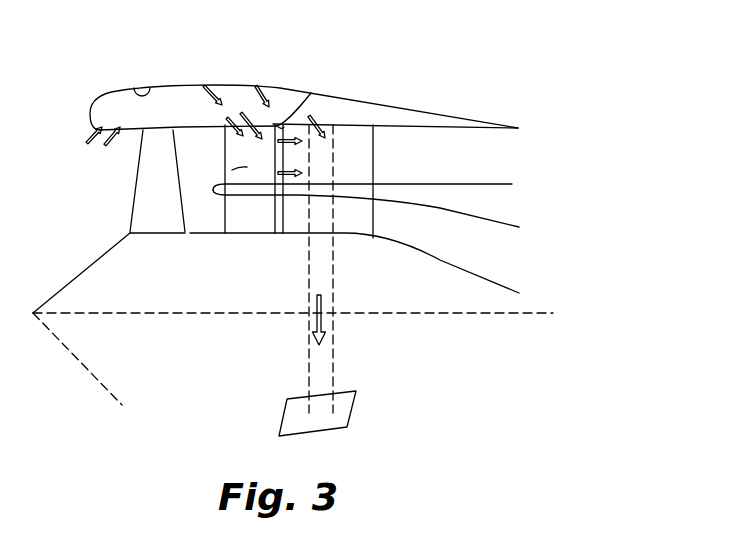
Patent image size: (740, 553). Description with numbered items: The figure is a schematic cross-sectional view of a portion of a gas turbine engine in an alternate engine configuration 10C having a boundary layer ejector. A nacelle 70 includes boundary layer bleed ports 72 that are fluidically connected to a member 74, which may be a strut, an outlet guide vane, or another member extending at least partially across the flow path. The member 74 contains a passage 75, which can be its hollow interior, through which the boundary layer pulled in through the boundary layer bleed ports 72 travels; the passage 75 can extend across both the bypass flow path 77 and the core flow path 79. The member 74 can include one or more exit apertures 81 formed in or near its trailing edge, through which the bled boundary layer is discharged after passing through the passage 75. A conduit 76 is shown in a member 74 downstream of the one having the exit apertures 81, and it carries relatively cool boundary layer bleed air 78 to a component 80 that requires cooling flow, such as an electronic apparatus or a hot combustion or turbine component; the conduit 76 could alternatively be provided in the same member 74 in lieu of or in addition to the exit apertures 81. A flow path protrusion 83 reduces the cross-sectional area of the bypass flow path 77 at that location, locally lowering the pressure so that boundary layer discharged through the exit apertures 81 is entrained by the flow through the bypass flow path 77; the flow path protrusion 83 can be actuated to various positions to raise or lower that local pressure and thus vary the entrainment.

The alternate engine configuration 10C is at (348, 46).
The nacelle 70 is at (147, 88).
The boundary layer bleed ports 72 is at (87, 132).
The member 74 is at (225, 162).
The passage 75 is at (225, 170).
The conduit 76 is at (333, 277).
The bypass flow path 77 is at (483, 165).
The boundary layer bleed air 78 is at (315, 303).
The core flow path 79 is at (479, 254).
The component 80 is at (345, 408).
The exit apertures 81 is at (308, 97).
The flow path protrusion 83 is at (262, 129).